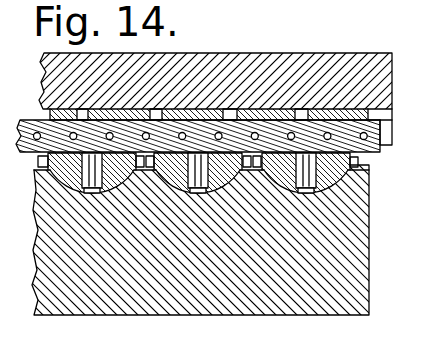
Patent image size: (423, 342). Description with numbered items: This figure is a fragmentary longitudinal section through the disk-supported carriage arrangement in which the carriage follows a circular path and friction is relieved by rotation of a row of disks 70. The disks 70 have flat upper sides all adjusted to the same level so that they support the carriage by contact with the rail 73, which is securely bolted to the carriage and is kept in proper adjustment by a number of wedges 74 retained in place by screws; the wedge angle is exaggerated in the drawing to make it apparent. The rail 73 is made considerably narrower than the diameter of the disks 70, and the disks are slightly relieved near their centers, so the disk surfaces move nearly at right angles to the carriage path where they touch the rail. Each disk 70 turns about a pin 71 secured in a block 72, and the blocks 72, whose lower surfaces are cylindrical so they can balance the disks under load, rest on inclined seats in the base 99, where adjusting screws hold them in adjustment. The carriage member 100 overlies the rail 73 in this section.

The upper block 100 is at (296, 72).
The wedges 74 is at (335, 110).
The rail 73 is at (370, 142).
The disks 70 is at (362, 162).
The pins 71 is at (330, 180).
The blocks 72 is at (308, 180).
The base 99 is at (357, 270).